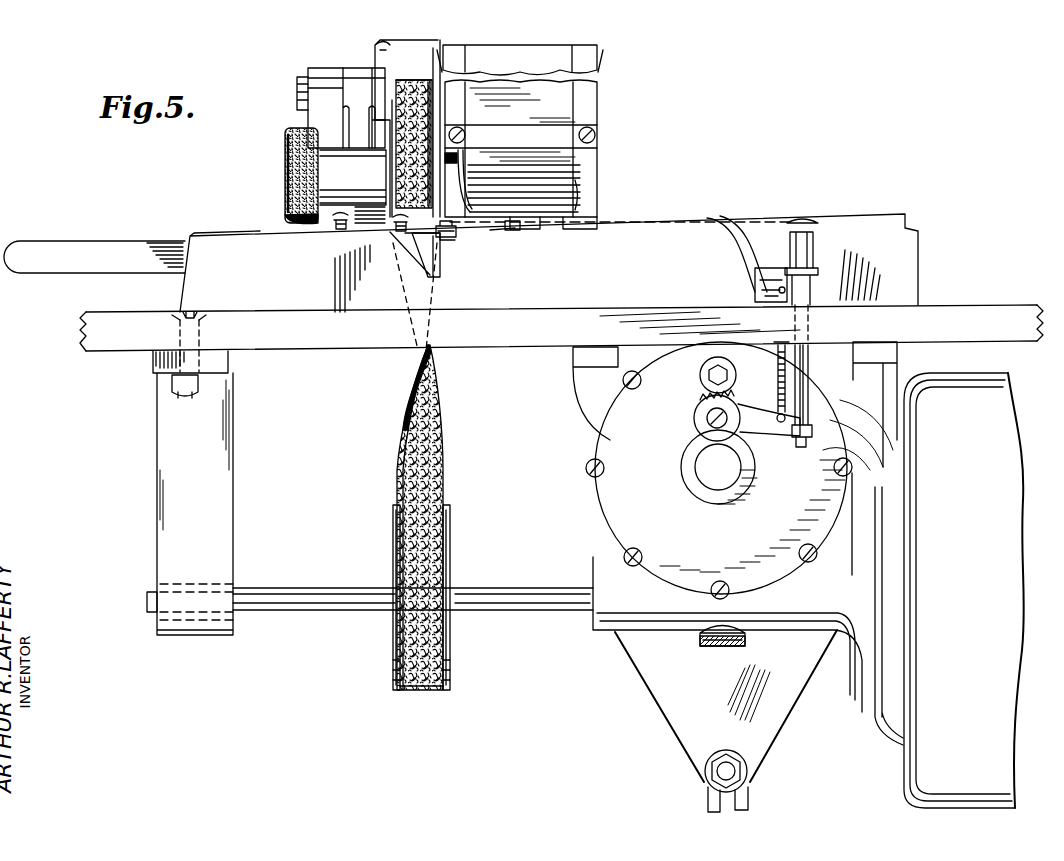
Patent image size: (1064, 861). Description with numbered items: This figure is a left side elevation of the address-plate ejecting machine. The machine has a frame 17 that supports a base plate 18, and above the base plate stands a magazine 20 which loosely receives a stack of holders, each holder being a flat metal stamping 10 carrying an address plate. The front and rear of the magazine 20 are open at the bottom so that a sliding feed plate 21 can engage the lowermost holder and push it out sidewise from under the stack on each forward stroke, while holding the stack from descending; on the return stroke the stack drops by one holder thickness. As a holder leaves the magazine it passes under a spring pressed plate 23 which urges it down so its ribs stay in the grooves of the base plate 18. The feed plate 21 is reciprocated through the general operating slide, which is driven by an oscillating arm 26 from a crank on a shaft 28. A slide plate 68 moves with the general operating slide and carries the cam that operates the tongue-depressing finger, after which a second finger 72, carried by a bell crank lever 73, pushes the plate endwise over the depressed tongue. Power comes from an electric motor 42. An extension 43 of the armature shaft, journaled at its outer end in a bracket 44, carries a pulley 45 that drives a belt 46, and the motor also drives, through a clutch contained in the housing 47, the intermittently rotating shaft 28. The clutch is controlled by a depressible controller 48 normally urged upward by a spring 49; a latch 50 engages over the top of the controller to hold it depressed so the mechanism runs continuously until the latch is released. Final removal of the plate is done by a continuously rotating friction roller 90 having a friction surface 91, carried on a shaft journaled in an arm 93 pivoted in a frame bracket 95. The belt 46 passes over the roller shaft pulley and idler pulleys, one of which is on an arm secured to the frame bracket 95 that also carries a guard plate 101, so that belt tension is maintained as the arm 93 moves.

The flat metal stamping 10 is at (576, 207).
The frame 17 is at (972, 305).
The base plate 18 is at (880, 237).
The magazine 20 is at (592, 104).
The feed plate 21 is at (405, 230).
The spring pressed plate 23 is at (268, 236).
The arm 26 is at (748, 800).
The shaft 28 is at (703, 462).
The electric motor 42 is at (1005, 440).
The extension of the armature shaft 43 is at (510, 586).
The bracket 44 is at (225, 518).
The pulley 45 is at (447, 562).
The belt 46 is at (418, 88).
The housing 47 is at (603, 428).
The depressible controller 48 is at (798, 222).
The spring 49 is at (777, 392).
The latch 50 is at (722, 246).
The slide plate 68 is at (86, 250).
The second finger 72 is at (398, 250).
The bell crank lever 73 is at (443, 238).
The friction roller 90 is at (286, 162).
The friction surface 91 is at (297, 130).
The arm 93 is at (354, 75).
The frame bracket 95 is at (317, 74).
The guard plate 101 is at (428, 48).